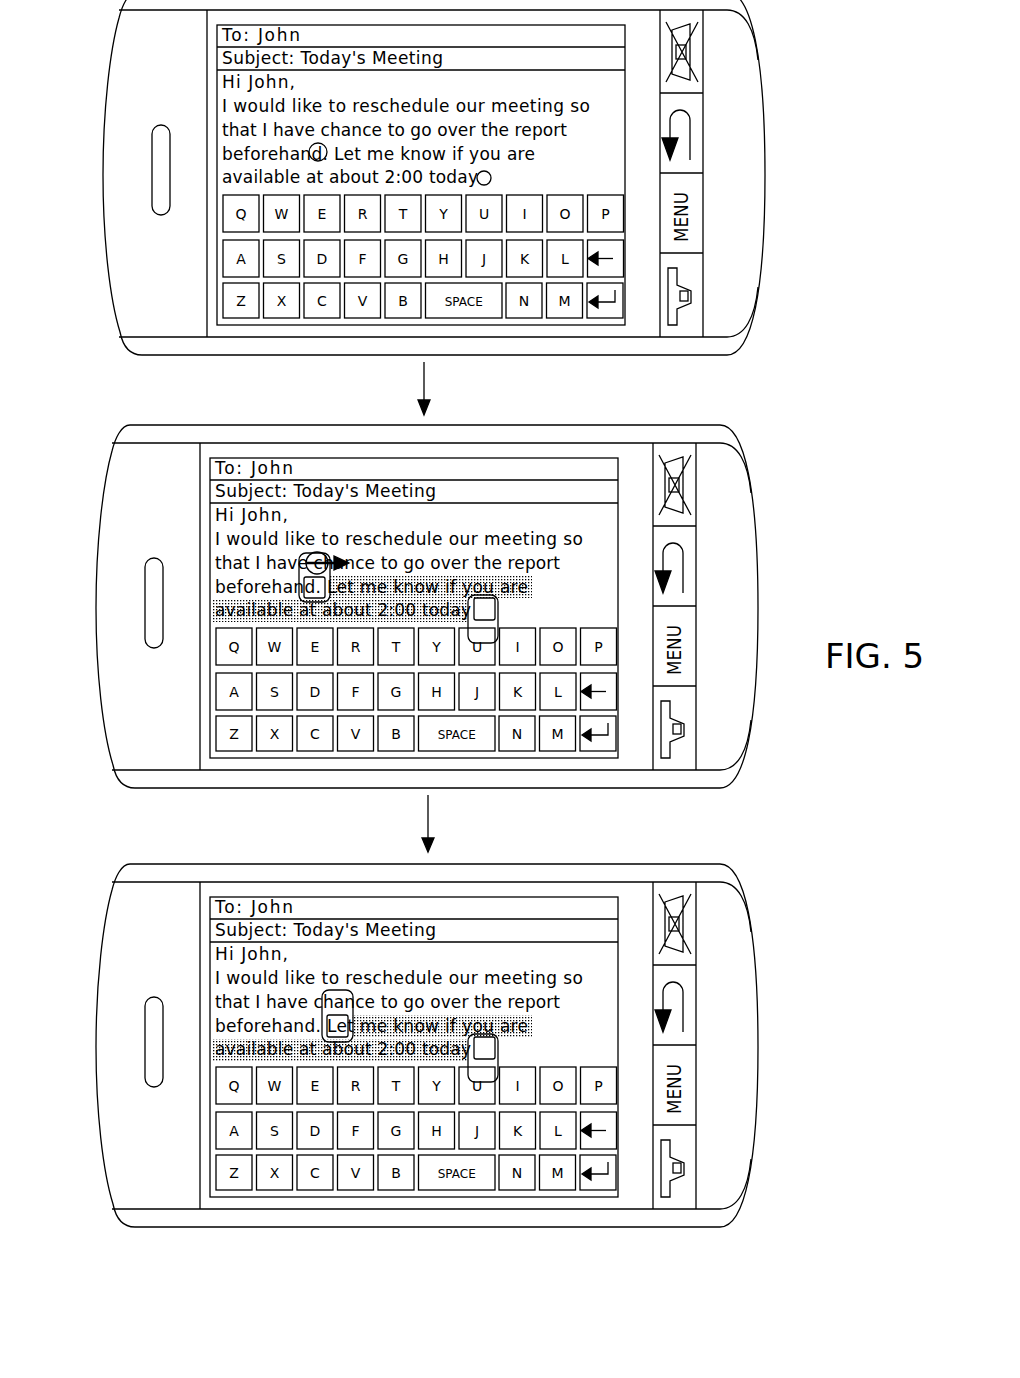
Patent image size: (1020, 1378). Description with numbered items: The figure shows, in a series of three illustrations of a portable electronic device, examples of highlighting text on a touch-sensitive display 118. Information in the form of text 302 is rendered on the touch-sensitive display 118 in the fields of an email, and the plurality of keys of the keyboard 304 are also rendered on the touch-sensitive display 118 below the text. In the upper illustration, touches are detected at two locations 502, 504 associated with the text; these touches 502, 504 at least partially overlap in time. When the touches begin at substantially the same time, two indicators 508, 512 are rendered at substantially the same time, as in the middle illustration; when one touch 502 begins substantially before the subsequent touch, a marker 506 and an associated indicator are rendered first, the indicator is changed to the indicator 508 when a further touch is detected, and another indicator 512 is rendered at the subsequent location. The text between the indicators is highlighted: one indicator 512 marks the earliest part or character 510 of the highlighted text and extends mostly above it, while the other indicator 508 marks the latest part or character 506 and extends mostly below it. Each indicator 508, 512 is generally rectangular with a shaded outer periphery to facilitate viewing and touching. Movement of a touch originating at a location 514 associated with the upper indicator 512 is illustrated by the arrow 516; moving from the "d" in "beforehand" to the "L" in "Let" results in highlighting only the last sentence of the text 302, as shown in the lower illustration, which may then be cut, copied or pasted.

The touch-sensitive display 118 is at (572, 325).
The text 302 is at (590, 103).
The keyboard 304 is at (626, 214).
The touch location 502 is at (491, 178).
The touch location 504 is at (311, 146).
The marker 506 is at (498, 600).
The indicator 508 is at (483, 613).
The character 510 is at (300, 578).
The indicator 512 is at (304, 597).
The location 514 is at (307, 554).
The arrow 516 is at (345, 556).